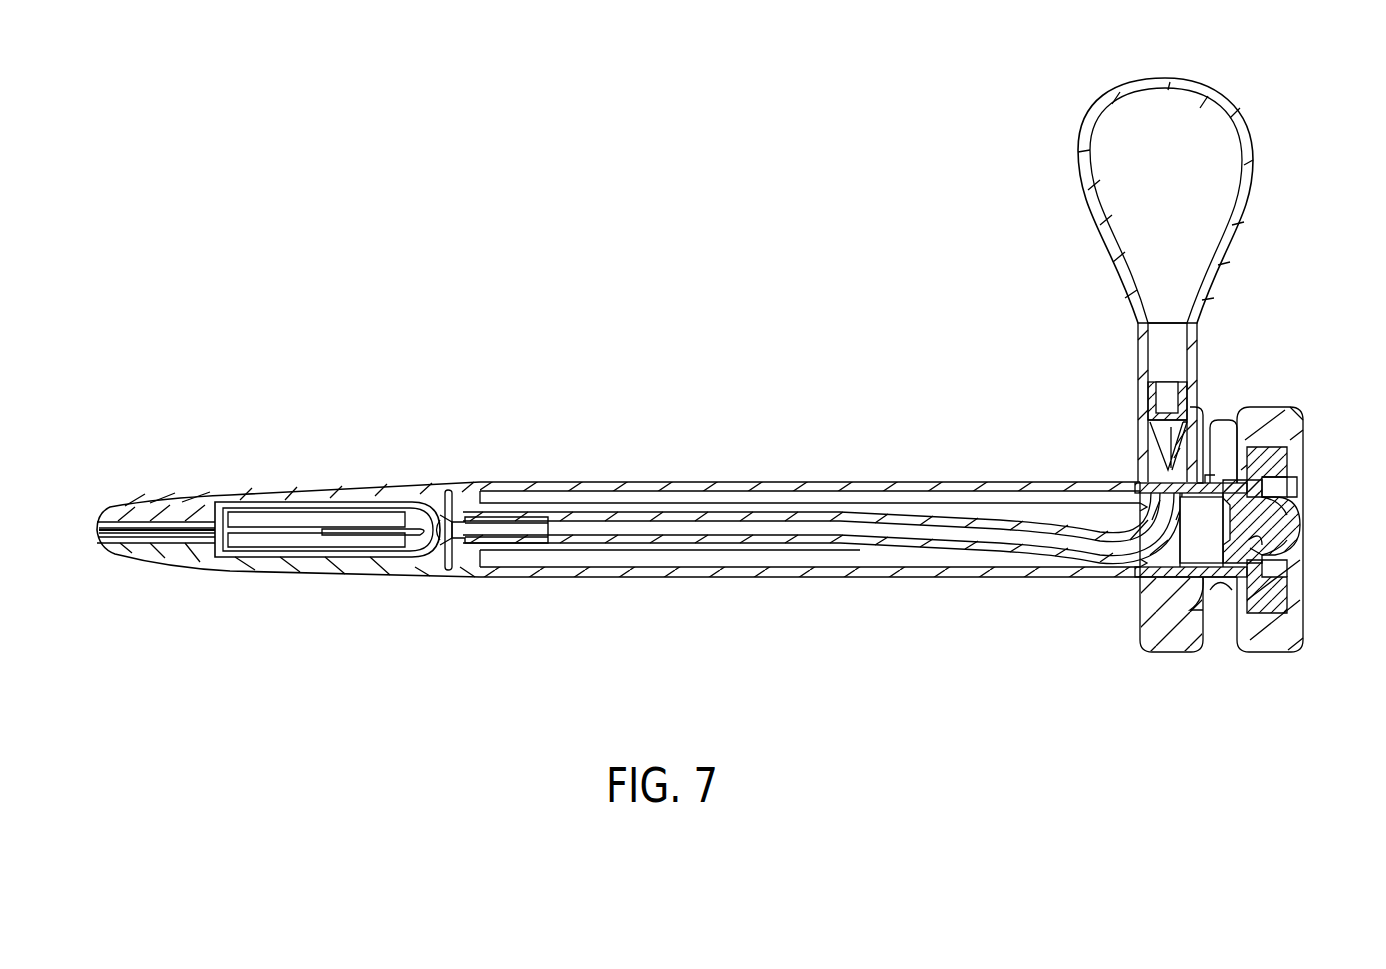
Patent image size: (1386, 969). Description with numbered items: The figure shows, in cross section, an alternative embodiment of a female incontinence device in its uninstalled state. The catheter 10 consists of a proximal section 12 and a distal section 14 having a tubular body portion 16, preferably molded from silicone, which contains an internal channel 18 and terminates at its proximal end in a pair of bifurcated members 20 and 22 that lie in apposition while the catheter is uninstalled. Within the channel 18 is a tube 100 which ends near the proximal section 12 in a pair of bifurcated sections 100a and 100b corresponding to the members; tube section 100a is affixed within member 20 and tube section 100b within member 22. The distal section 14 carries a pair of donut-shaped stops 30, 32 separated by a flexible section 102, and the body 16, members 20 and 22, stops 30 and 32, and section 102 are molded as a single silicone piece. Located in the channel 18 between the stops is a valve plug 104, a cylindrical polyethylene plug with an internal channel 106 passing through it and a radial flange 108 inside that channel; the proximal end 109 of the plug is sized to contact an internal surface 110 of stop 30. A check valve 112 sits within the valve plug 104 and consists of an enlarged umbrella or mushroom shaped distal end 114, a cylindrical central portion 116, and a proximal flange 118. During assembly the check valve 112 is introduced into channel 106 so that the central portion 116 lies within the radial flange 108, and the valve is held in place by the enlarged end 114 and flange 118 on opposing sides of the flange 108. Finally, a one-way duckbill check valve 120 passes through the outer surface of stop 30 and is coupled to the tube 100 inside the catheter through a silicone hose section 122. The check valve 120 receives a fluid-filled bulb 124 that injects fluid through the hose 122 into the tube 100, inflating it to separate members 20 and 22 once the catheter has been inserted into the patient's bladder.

The catheter 10 is at (430, 372).
The proximal section 12 is at (115, 502).
The distal section 14 is at (1303, 420).
The tubular body portion 16 is at (652, 484).
The internal channel 18 is at (752, 498).
The bifurcated member 20 is at (200, 495).
The bifurcated member 22 is at (177, 556).
The donut-shaped stop 30 is at (1153, 628).
The donut-shaped stop 32 is at (1290, 638).
The tube 100 is at (497, 525).
The tube section 100a is at (290, 521).
The tube section 100b is at (310, 546).
The flexible section 102 is at (1213, 478).
The valve plug 104 is at (1267, 452).
The internal channel 106 is at (1219, 583).
The radial flange 108 is at (1298, 562).
The proximal end 109 is at (1158, 483).
The internal surface 110 is at (1198, 580).
The check valve 112 is at (1291, 510).
The enlarged distal end 114 is at (1290, 520).
The cylindrical central portion 116 is at (1288, 487).
The proximal flange 118 is at (1268, 532).
The duckbill check valve 120 is at (1150, 405).
The silicone hose section 122 is at (877, 521).
The fluid-filled bulb 124 is at (1078, 152).